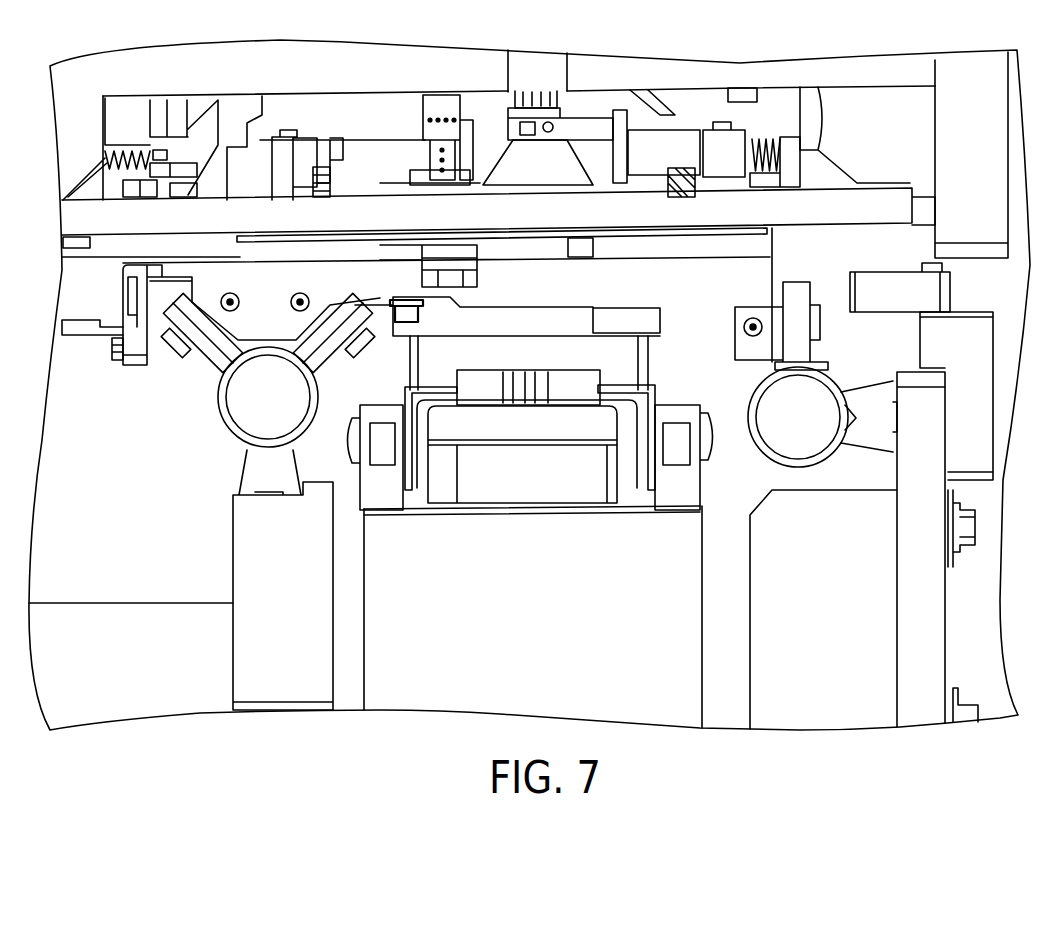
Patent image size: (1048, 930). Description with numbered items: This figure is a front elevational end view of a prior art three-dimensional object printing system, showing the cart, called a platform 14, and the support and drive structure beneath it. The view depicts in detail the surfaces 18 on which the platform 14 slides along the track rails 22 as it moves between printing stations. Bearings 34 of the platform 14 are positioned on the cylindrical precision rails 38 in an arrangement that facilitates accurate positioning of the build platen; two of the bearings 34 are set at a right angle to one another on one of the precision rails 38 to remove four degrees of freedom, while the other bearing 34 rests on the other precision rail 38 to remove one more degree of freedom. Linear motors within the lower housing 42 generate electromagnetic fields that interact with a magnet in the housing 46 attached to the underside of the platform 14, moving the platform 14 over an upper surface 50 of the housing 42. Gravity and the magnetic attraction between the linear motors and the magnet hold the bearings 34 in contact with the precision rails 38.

The platform 14 is at (498, 211).
The surfaces 18 is at (383, 405).
The track rails 22 is at (360, 478).
The bearings 34 is at (797, 303).
The precision rails 38 is at (220, 420).
The housing 42 is at (408, 693).
The housing 46 is at (487, 482).
The upper surface 50 is at (528, 522).